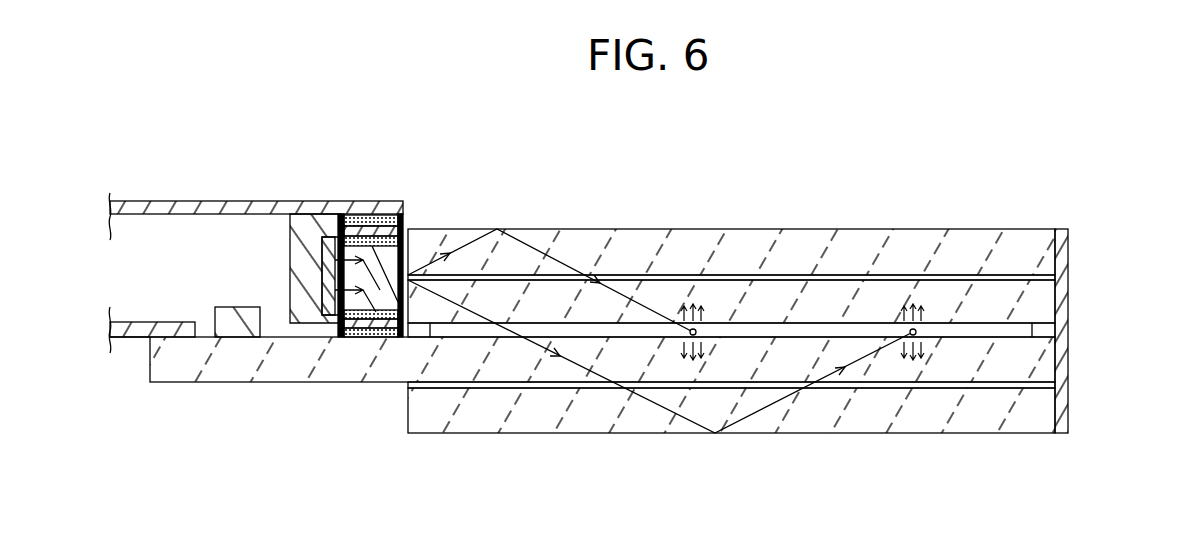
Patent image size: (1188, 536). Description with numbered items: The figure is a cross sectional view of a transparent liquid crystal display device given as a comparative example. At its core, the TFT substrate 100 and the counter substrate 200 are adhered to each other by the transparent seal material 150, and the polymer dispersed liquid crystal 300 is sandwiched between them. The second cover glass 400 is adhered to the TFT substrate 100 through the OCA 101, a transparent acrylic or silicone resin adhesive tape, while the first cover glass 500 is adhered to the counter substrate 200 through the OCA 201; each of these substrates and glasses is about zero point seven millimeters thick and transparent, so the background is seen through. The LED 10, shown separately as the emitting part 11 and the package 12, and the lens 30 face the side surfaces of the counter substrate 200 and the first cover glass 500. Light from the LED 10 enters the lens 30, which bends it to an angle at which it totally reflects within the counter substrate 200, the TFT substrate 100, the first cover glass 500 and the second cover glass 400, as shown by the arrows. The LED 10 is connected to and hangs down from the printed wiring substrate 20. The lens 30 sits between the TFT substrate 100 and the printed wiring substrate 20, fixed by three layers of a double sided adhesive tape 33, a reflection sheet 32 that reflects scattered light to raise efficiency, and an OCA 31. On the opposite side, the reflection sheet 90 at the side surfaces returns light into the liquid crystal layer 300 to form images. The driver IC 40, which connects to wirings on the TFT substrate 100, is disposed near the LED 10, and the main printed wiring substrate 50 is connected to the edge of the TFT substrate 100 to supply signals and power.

The LED 10 is at (360, 142).
The emitting part 11 is at (329, 250).
The package 12 is at (305, 250).
The printed wiring substrate 20 is at (231, 209).
The lens 30 is at (392, 291).
The OCA 31 is at (370, 221).
The reflection sheet 32 is at (386, 231).
The double sided adhesive tape 33 is at (400, 242).
The driver IC 40 is at (238, 325).
The main printed wiring substrate 50 is at (182, 330).
The reflection sheet 90 is at (1060, 235).
The TFT substrate 100 is at (1042, 360).
The OCA 101 is at (1048, 385).
The transparent seal material 150 is at (1040, 330).
The counter substrate 200 is at (1045, 302).
The OCA 201 is at (1045, 278).
The polymer dispersed liquid crystal 300 is at (960, 335).
The second cover glass 400 is at (1045, 408).
The first cover glass 500 is at (1040, 252).